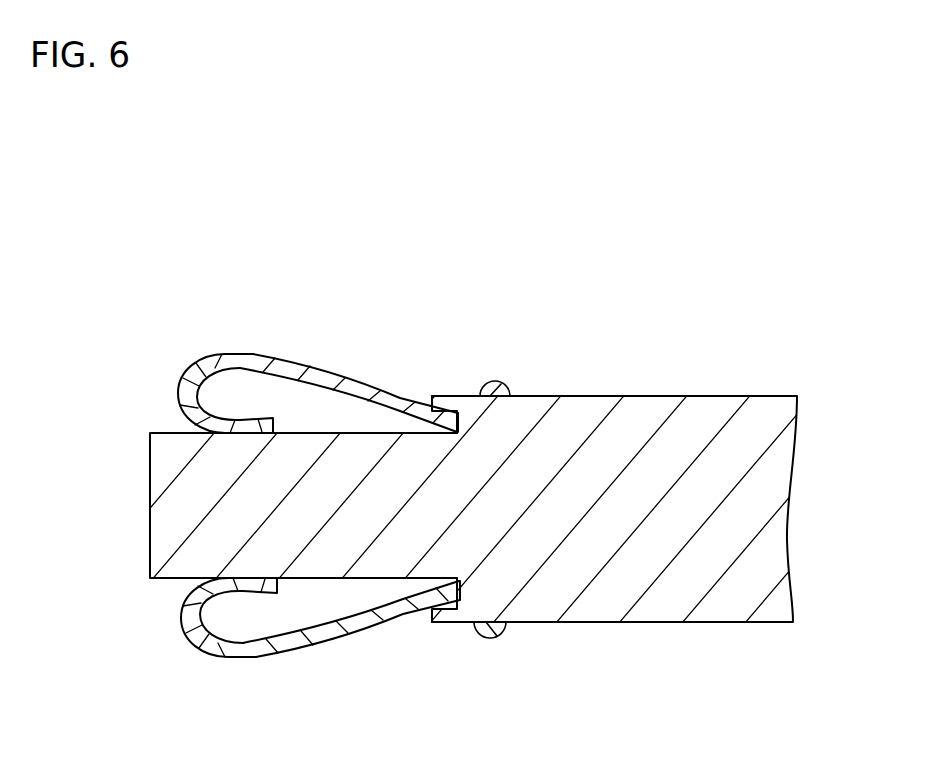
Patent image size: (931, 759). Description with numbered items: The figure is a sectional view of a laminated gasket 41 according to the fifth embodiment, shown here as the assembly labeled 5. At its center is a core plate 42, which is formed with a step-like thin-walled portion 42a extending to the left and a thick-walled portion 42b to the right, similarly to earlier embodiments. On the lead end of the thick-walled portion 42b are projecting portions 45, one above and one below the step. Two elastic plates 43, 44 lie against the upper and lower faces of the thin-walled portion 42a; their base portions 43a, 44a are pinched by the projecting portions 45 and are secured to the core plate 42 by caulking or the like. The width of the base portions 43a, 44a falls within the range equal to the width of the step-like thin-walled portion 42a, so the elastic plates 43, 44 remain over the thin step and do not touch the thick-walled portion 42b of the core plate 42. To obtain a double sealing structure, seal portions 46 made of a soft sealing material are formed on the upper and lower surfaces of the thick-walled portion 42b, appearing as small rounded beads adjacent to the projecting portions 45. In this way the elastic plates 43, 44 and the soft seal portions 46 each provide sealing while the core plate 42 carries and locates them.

The connector assembly 5 is at (98, 528).
The laminated gasket 41 is at (710, 358).
The core plate 42 is at (488, 514).
The step-like thin-walled portion 42a is at (170, 542).
The thick-walled portion 42b is at (675, 598).
The elastic plate 43 is at (318, 345).
The base portion 43a is at (260, 352).
The elastic plate 44 is at (320, 661).
The base portion 44a is at (272, 660).
The projecting portions 45 is at (439, 395).
The seal portions 46 is at (505, 382).